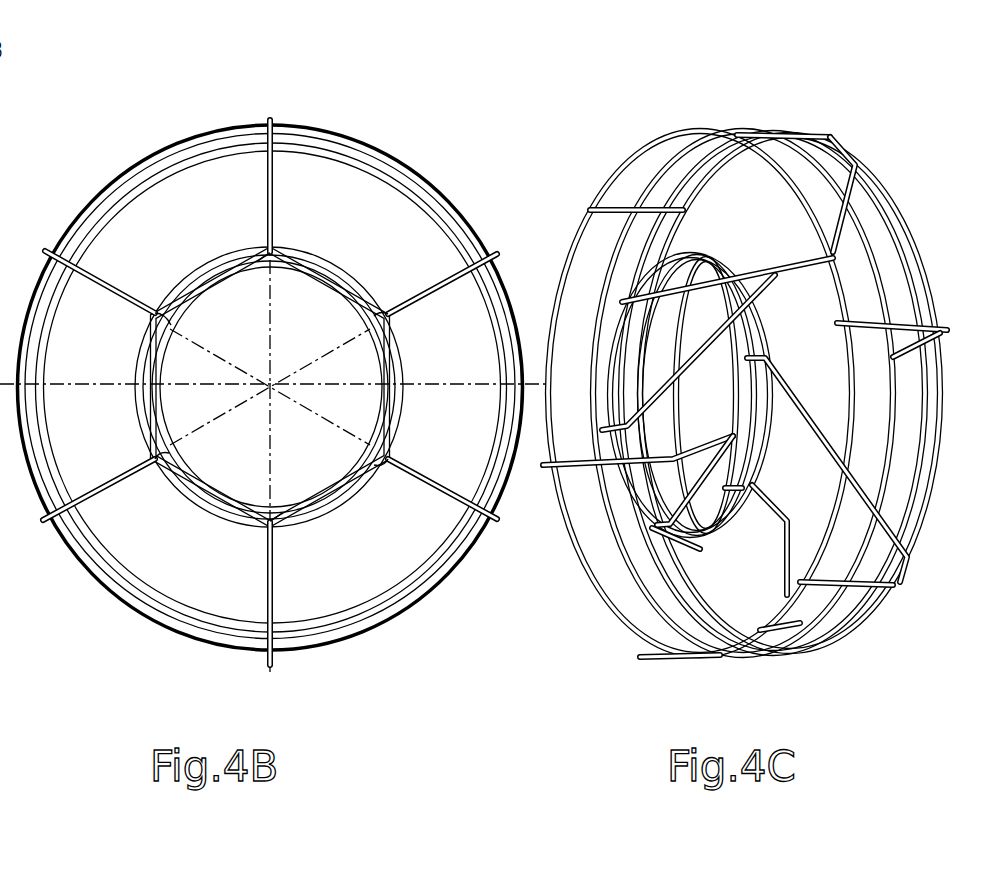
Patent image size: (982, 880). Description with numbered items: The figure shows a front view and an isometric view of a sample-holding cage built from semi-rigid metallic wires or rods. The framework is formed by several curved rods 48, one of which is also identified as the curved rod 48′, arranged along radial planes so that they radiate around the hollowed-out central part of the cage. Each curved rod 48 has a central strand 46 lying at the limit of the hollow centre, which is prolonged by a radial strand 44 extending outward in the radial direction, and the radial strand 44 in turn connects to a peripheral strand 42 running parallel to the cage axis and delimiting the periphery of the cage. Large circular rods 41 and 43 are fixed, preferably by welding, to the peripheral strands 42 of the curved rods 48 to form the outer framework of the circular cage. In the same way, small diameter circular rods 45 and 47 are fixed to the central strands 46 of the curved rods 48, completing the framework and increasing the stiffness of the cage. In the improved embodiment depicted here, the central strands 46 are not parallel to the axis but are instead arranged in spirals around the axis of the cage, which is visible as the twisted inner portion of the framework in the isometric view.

In FIG. 4B, the circular rod 41 is at (60, 238).
In FIG. 4C, the circular rod 41 is at (858, 149).
In FIG. 4C, the peripheral strand 42 is at (770, 128).
In FIG. 4B, the circular rod 43 is at (88, 235).
In FIG. 4C, the circular rod 43 is at (938, 290).
In FIG. 4B, the radial strand 44 is at (129, 284).
In FIG. 4C, the radial strand 44 is at (855, 194).
In FIG. 4B, the small diameter circular rod 45 is at (199, 279).
In FIG. 4C, the small diameter circular rod 45 is at (850, 278).
In FIG. 4B, the central strand 46 is at (227, 281).
In FIG. 4C, the central strand 46 is at (760, 274).
In FIG. 4B, the small diameter circular rod 47 is at (251, 241).
In FIG. 4C, the small diameter circular rod 47 is at (638, 274).
In FIG. 4B, the curved rod 48 is at (280, 180).
In FIG. 4C, the curved rod 48 is at (829, 134).
In FIG. 4B, the curved rod 48′ is at (596, 211).